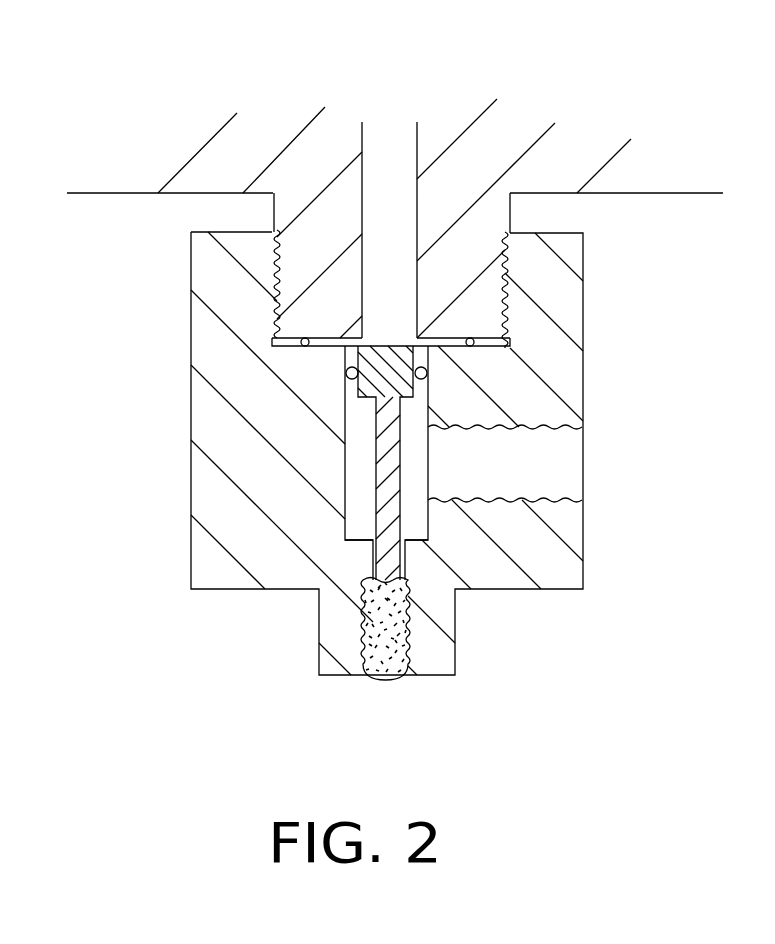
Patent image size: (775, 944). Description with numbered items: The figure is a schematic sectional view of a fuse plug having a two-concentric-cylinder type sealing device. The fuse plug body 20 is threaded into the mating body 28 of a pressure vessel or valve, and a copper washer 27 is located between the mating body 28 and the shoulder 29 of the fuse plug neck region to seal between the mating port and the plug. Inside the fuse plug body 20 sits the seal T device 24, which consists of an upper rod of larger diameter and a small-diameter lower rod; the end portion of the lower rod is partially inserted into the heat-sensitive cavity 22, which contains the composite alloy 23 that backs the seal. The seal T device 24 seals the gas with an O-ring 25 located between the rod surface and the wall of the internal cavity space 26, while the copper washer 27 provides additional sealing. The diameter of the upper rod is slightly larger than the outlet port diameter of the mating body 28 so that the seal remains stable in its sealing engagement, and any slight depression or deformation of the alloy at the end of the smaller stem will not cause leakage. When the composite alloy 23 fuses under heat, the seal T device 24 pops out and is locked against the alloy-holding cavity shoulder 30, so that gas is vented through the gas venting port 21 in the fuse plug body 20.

The fuse plug body 20 is at (238, 538).
The gas venting port 21 is at (552, 459).
The heat-sensitive cavity 22 is at (362, 608).
The composite alloy 23 is at (390, 645).
The seal T device 24 is at (388, 412).
The O-ring 25 is at (428, 373).
The internal cavity space 26 is at (343, 462).
The copper washer 27 is at (470, 343).
The mating body 28 is at (495, 137).
The shoulder 29 is at (284, 346).
The alloy-holding cavity shoulder 30 is at (430, 545).